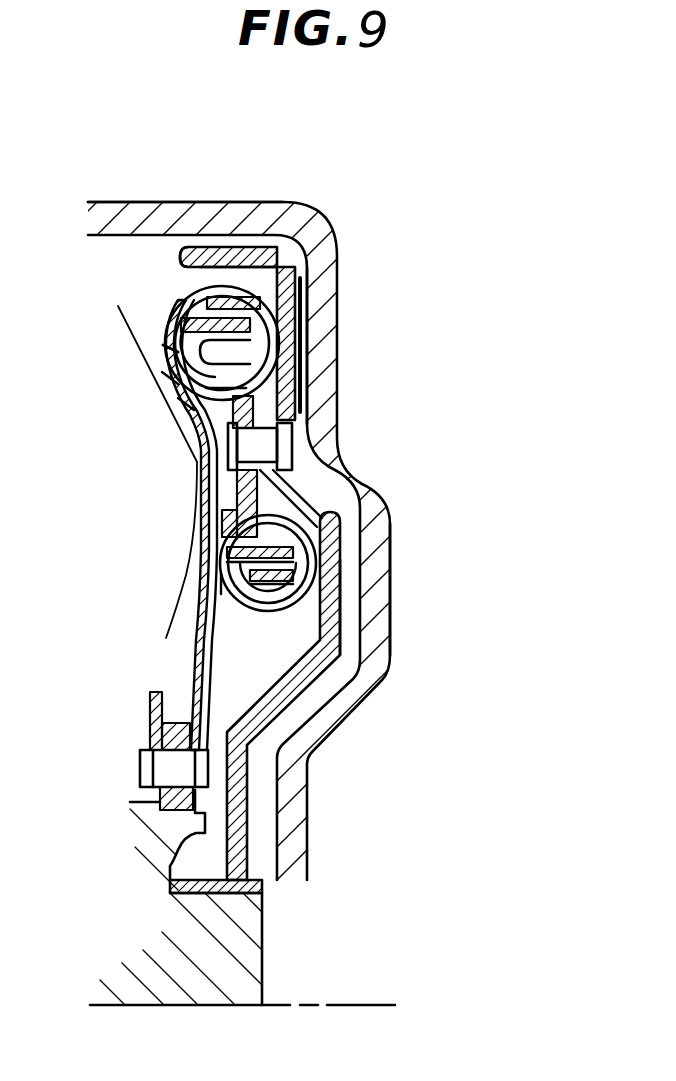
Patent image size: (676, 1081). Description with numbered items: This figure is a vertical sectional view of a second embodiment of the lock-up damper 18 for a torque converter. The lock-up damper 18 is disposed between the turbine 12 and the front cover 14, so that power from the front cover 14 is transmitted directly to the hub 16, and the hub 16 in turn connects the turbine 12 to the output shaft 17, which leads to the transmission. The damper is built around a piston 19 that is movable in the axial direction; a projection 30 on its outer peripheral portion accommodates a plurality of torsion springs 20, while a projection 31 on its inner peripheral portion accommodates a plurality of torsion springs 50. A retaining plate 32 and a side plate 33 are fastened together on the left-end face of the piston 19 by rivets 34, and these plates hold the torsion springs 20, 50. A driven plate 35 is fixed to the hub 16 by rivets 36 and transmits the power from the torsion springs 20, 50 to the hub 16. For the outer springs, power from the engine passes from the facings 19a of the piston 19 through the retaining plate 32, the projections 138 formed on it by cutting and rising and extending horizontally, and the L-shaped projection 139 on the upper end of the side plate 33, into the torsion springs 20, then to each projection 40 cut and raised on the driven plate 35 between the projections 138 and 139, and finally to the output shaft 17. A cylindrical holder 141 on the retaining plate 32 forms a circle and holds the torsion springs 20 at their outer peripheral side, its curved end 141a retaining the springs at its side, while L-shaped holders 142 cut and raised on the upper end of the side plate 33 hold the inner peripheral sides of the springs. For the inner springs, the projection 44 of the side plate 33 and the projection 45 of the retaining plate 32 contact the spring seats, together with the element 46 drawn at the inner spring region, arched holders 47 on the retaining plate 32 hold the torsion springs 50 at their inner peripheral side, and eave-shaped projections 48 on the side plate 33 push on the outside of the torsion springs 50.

The turbine 12 is at (128, 328).
The front cover 14 is at (393, 545).
The hub 16 is at (165, 835).
The output shaft 17 is at (238, 1010).
The lock-up damper 18 is at (152, 262).
The piston 19 is at (318, 225).
The facing 19a is at (337, 282).
The torsion spring 20 is at (166, 303).
The projection 30 is at (290, 365).
The projection 31 is at (345, 672).
The retaining plate 32 is at (297, 300).
The side plate 33 is at (205, 478).
The rivet 34 is at (300, 440).
The driven plate 35 is at (160, 378).
The rivet 36 is at (170, 770).
The projection 40 is at (300, 340).
The projection 44 is at (335, 510).
The inner race 46 is at (340, 578).
The projection 45 is at (325, 632).
The arched holder 47 is at (255, 612).
The projection 48 is at (225, 515).
The torsion spring 50 is at (216, 584).
The projection 138 is at (234, 246).
The projection 139 is at (160, 352).
The cylindrical holder 141 is at (274, 247).
The end of holder 141a is at (187, 247).
The holder 142 is at (178, 402).